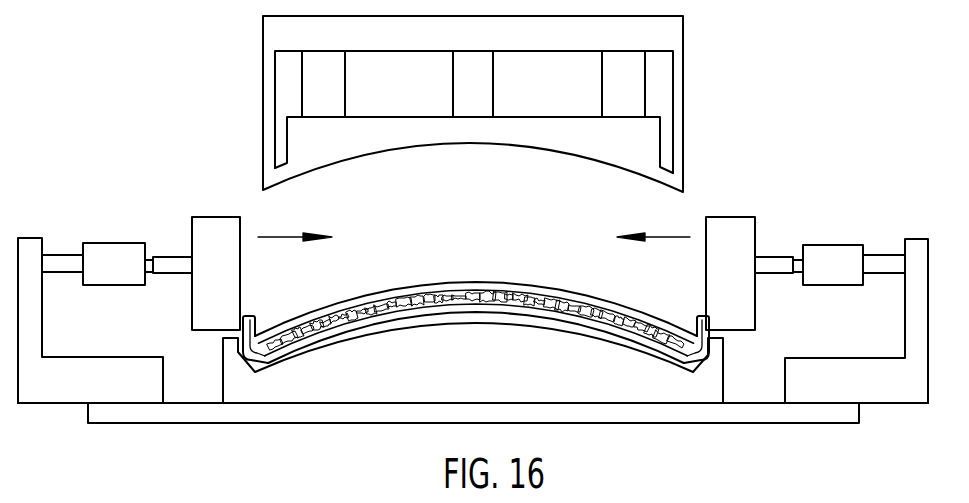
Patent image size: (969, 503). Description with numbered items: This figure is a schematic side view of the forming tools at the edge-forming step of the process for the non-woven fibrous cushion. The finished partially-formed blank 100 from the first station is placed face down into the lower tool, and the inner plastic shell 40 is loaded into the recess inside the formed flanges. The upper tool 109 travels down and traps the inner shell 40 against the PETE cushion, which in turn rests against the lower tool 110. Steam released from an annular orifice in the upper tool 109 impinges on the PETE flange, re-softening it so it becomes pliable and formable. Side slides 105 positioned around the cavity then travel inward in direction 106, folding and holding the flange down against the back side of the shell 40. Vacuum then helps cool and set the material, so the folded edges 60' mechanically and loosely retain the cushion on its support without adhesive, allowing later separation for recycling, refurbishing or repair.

The upper tool 109 is at (303, 143).
The side slides 105 is at (215, 217).
The inward direction 106 is at (288, 236).
The lower tool 110 is at (568, 380).
The partially-formed blank 100 is at (476, 297).
The inner plastic shell 40 is at (473, 282).
The folded edges 60' is at (476, 317).